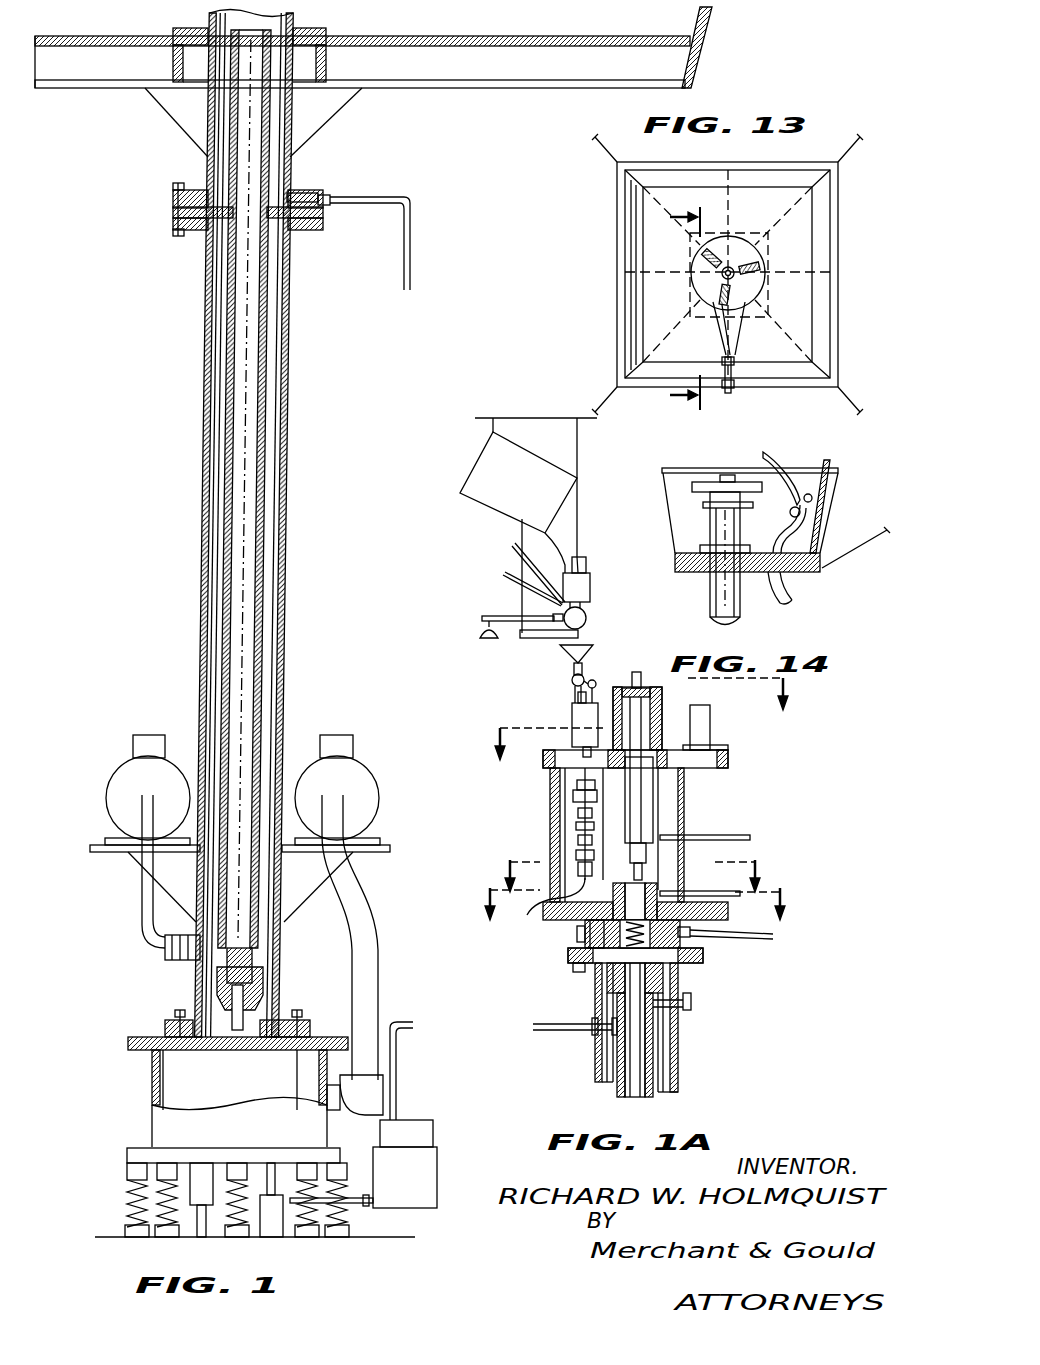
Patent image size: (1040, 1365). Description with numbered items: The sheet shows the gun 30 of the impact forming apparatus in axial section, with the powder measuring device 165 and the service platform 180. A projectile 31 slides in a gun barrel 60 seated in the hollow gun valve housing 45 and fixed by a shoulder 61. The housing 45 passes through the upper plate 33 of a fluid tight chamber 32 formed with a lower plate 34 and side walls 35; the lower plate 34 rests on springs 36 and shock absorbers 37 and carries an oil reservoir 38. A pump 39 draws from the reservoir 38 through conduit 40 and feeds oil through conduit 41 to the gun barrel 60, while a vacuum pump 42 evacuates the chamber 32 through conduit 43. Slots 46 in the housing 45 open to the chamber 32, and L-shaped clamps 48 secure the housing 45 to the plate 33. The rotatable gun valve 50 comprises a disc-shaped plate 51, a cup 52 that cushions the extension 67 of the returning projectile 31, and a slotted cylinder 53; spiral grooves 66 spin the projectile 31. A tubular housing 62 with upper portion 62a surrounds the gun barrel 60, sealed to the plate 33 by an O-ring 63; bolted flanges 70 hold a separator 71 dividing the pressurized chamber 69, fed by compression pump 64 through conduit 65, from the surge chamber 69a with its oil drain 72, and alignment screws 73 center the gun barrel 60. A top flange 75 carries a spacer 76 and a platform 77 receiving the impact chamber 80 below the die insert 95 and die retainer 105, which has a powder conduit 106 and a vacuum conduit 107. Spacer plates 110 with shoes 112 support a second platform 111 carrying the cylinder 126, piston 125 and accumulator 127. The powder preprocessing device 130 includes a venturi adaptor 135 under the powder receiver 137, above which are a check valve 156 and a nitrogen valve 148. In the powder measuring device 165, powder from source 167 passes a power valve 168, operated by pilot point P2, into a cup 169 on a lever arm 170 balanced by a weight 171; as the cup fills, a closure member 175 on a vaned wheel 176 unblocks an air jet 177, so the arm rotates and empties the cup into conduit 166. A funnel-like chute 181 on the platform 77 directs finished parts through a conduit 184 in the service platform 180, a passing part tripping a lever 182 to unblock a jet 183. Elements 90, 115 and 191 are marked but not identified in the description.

In FIG. 1, the gun 30 is at (196, 615).
In FIG. 1A, the gun 30 is at (592, 1059).
In FIG. 1, the projectile 31 is at (253, 950).
In FIG. 1, the fluid tight chamber 32 is at (152, 1090).
In FIG. 1, the upper horizontal plate 33 is at (128, 1045).
In FIG. 1, the lower parallel plate 34 is at (128, 1155).
In FIG. 1, the vertical side walls 35 is at (150, 1128).
In FIG. 1, the springs 36 is at (160, 1210).
In FIG. 1, the shock absorbers 37 is at (205, 1160).
In FIG. 1, the reservoir 38 is at (255, 1200).
In FIG. 1, the pump 39 is at (437, 1138).
In FIG. 1, the conduit 40 is at (355, 1205).
In FIG. 1, the conduit 41 is at (397, 1075).
In FIG. 1A, the conduit 41 is at (540, 1020).
In FIG. 1, the vacuum pump 42 is at (362, 785).
In FIG. 1, the conduit 43 is at (353, 907).
In FIG. 1, the gun valve housing 45 is at (230, 1058).
In FIG. 1, the longitudinally extending slots 46 is at (220, 1090).
In FIG. 1, the L-shaped clamps 48 is at (263, 1017).
In FIG. 1, the gun valve 50 is at (218, 1095).
In FIG. 1, the disc-shaped plate 51 is at (243, 1082).
In FIG. 1, the hollow cylindrical cup 52 is at (245, 1095).
In FIG. 1, the hollow elongated cylinder 53 is at (243, 1060).
In FIG. 1, the gun barrel 60 is at (263, 548).
In FIG. 1A, the gun barrel 60 is at (653, 1095).
In FIG. 1, the shoulder 61 is at (262, 975).
In FIG. 1, the tubular housing 62 is at (285, 670).
In FIG. 1, the upper portion 62a is at (290, 142).
In FIG. 1A, the upper portion 62a is at (678, 1081).
In FIG. 1, the O-ring 63 is at (188, 1017).
In FIG. 1, the compression pump 64 is at (115, 782).
In FIG. 1, the conduit 65 is at (141, 897).
In FIG. 1, the spiral-shaped grooves 66 is at (233, 967).
In FIG. 1, the extension 67 is at (233, 1007).
In FIG. 1, the pressurized chamber 69 is at (275, 495).
In FIG. 1, the surge chamber 69a is at (278, 178).
In FIG. 1A, the surge chamber 69a is at (660, 1053).
In FIG. 1, the flanges 70 is at (173, 226).
In FIG. 1, the metal separator 71 is at (302, 216).
In FIG. 1, the oil drain 72 is at (388, 196).
In FIG. 1A, the alignment screws 73 is at (691, 1004).
In FIG. 1A, the flange 75 is at (700, 960).
In FIG. 14, the flange 75 is at (703, 505).
In FIG. 1A, the annular spacer 76 is at (692, 947).
In FIG. 14, the annular spacer 76 is at (694, 489).
In FIG. 1A, the annular platform 77 is at (729, 913).
In FIG. 13, the annular platform 77 is at (757, 251).
In FIG. 14, the annular platform 77 is at (702, 480).
In FIG. 1A, the impact chamber 80 is at (615, 978).
In FIG. 1A, the valve block 90 is at (586, 936).
In FIG. 1A, the die insert 95 is at (578, 932).
In FIG. 1A, the die retainer 105 is at (670, 885).
In FIG. 14, the die retainer 105 is at (730, 476).
In FIG. 1A, the conduit 106 is at (597, 920).
In FIG. 1A, the conduit 107 is at (742, 892).
In FIG. 1A, the spacer plates 110 is at (660, 795).
In FIG. 13, the spacer plates 110 is at (762, 293).
In FIG. 1A, the second platform 111 is at (728, 760).
In FIG. 1A, the spacer shoe 112 is at (622, 815).
In FIG. 1A, the nozzle tip 115 is at (650, 835).
In FIG. 1A, the piston 125 is at (662, 693).
In FIG. 1A, the cylinder 126 is at (710, 712).
In FIG. 1A, the accumulator 127 is at (710, 733).
In FIG. 1A, the powder preprocessing device 130 is at (573, 832).
In FIG. 1A, the venturi adaptor 135 is at (575, 795).
In FIG. 1A, the powder receiver 137 is at (578, 783).
In FIG. 1A, the spring biased valve 148 is at (572, 708).
In FIG. 1A, the check valve 156 is at (572, 681).
In FIG. 1A, the powder measuring device 165 is at (597, 605).
In FIG. 1A, the conduit 166 is at (573, 668).
In FIG. 1A, the source of powder 167 is at (525, 497).
In FIG. 1A, the power valve 168 is at (591, 590).
In FIG. 14, the power valve 168 is at (725, 549).
In FIG. 1A, the cup 169 is at (588, 620).
In FIG. 1A, the lever arm 170 is at (508, 618).
In FIG. 1A, the weight 171 is at (485, 647).
In FIG. 1A, the closure member 175 is at (519, 566).
In FIG. 1A, the vaned wheel 176 is at (589, 630).
In FIG. 1A, the jet 177 is at (516, 578).
In FIG. 1, the service platform 180 is at (75, 88).
In FIG. 13, the service platform 180 is at (838, 312).
In FIG. 13, the funnel-like chute 181 is at (736, 330).
In FIG. 14, the funnel-like chute 181 is at (778, 467).
In FIG. 13, the lever 182 is at (722, 350).
In FIG. 14, the lever 182 is at (823, 525).
In FIG. 13, the jet 183 is at (735, 367).
In FIG. 14, the jet 183 is at (826, 497).
In FIG. 14, the conduit 184 is at (798, 597).
In FIG. 1A, the lever 191 is at (742, 835).
In FIG. 1A, the pilot point P2 is at (590, 552).